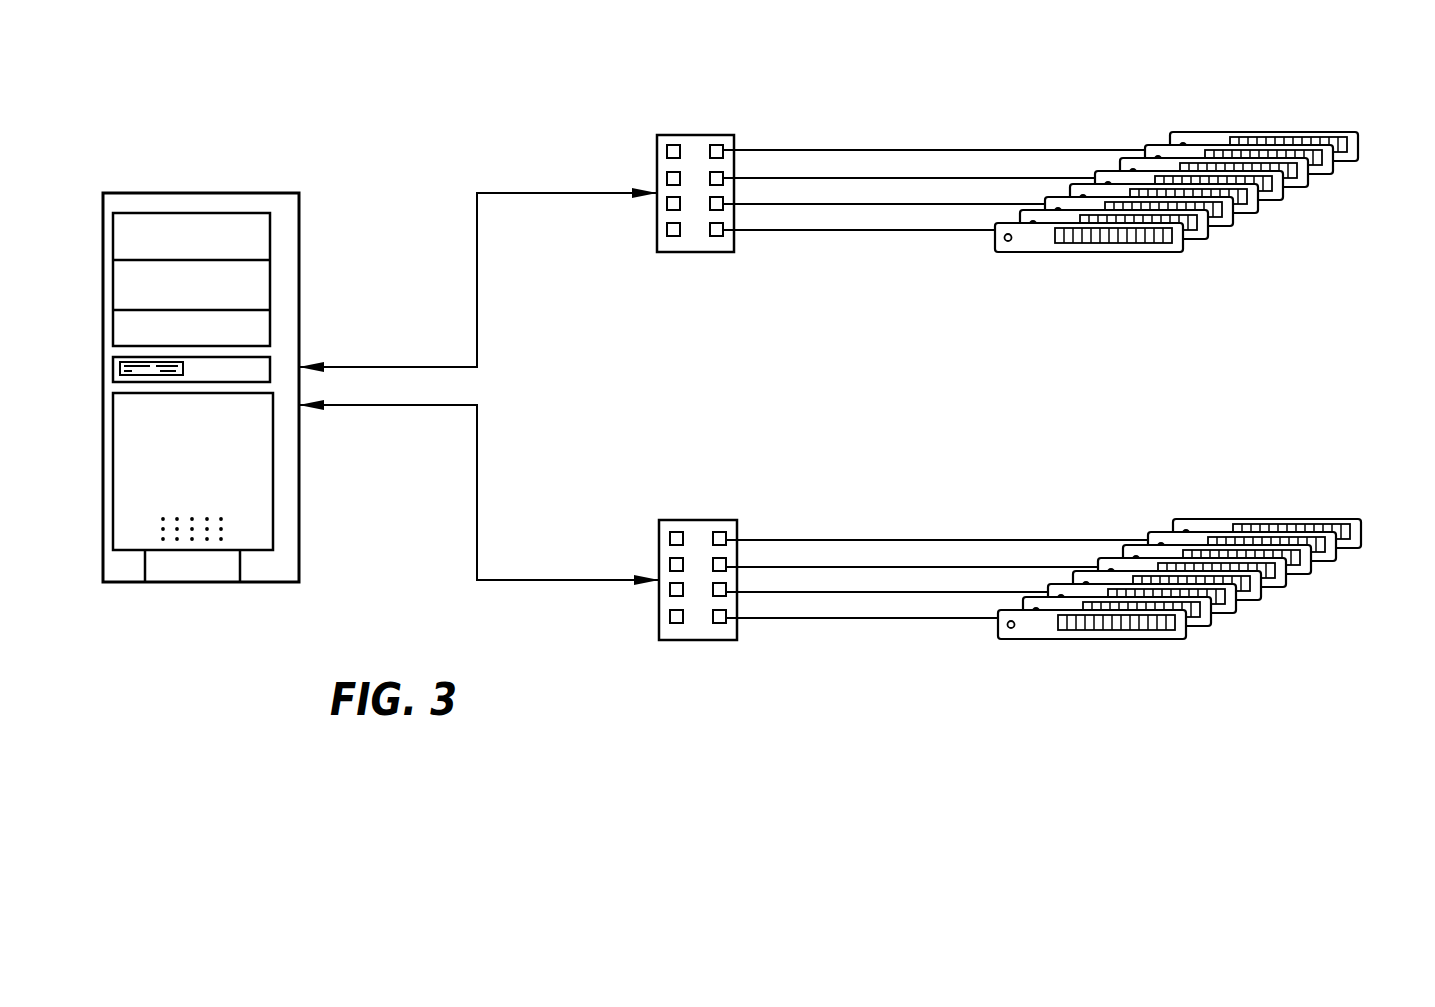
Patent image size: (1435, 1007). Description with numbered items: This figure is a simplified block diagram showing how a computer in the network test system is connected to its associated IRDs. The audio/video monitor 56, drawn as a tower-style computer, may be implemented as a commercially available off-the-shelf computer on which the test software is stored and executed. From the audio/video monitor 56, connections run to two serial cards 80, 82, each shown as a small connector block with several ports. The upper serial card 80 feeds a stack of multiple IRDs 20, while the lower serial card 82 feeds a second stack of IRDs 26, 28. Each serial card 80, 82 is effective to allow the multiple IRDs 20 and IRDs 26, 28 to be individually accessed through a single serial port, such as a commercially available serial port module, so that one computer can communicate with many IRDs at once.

The audio/video monitor 56 is at (227, 193).
The serial card 80 is at (655, 152).
The serial card 82 is at (657, 538).
The IRD 20 is at (1338, 101).
The IRD 26 is at (1208, 528).
The IRD 28 is at (1344, 487).